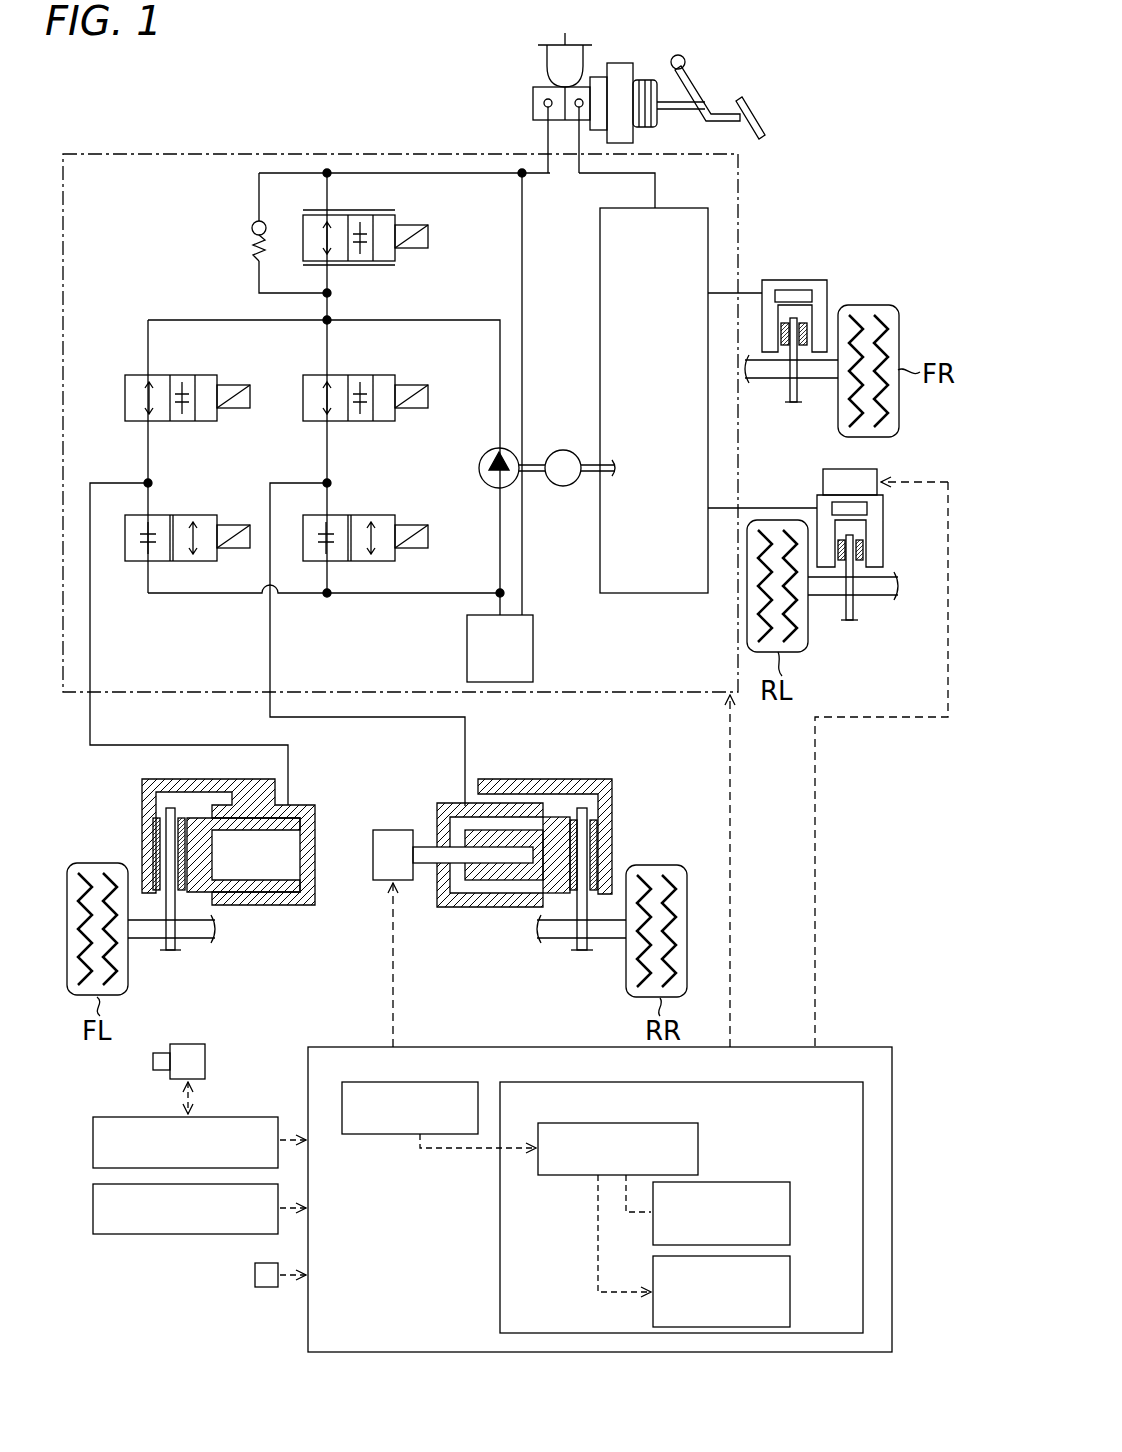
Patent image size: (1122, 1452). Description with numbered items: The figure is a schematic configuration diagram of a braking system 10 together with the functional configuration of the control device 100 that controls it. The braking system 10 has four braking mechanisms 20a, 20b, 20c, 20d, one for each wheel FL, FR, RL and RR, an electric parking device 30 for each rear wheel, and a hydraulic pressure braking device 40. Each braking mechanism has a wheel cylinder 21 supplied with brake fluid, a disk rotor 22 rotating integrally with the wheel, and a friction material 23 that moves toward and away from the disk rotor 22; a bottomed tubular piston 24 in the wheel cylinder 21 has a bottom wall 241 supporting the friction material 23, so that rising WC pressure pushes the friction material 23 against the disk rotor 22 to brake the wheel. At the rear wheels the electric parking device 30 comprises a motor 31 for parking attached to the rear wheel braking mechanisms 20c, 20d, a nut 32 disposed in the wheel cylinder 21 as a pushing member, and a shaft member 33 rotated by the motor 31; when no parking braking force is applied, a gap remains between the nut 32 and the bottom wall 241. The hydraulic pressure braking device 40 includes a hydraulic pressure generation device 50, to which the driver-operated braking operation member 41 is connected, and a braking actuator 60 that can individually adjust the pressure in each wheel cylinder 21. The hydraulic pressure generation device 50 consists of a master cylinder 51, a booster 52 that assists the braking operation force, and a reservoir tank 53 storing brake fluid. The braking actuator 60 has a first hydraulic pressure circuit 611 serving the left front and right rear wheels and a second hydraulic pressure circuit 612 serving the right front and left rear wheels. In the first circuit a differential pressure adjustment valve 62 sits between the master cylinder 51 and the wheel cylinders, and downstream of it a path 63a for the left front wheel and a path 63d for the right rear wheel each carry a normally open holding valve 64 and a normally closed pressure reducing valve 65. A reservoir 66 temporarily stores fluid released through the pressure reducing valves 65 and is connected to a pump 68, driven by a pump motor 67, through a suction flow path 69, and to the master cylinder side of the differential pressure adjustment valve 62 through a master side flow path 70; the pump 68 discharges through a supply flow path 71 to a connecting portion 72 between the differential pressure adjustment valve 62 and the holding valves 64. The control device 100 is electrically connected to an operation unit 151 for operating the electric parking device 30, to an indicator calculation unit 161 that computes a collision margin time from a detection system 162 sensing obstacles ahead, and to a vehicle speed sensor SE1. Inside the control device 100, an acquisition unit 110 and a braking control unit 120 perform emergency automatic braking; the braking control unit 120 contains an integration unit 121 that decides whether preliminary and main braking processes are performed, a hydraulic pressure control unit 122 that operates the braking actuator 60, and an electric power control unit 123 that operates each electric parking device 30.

The braking system 10 is at (872, 792).
The front wheel braking mechanism 20a is at (294, 942).
The front wheel braking mechanism 20b is at (858, 232).
The rear wheel braking mechanism 20c is at (866, 642).
The rear wheel braking mechanism 20d is at (627, 782).
The wheel cylinder 21 is at (793, 280).
The disk rotor 22 is at (789, 395).
The friction material 23 is at (789, 325).
The piston 24 is at (248, 906).
The bottom wall 241 is at (222, 852).
The electric parking device 30 is at (402, 770).
The motor for parking 31 is at (840, 469).
The nut 32 is at (494, 907).
The shaft member 33 is at (425, 847).
The hydraulic pressure braking device 40 is at (207, 90).
The braking operation member 41 is at (757, 120).
The hydraulic pressure generation device 50 is at (519, 57).
The master cylinder 51 is at (533, 100).
The booster 52 is at (645, 80).
The reservoir tank 53 is at (572, 45).
The braking actuator 60 is at (97, 156).
The first hydraulic pressure circuit 611 is at (372, 173).
The second hydraulic pressure circuit 612 is at (697, 208).
The differential pressure adjustment valve 62 is at (385, 212).
The path for the left front wheel 63a is at (148, 345).
The path for the right rear wheel 63d is at (327, 345).
The holding valve 64 is at (195, 375).
The pressure reducing valve 65 is at (195, 515).
The reservoir 66 is at (467, 655).
The pump motor 67 is at (565, 450).
The pump 68 is at (484, 460).
The suction flow path 69 is at (499, 575).
The master side flow path 70 is at (525, 290).
The supply flow path 71 is at (448, 320).
The connecting portion 72 is at (333, 309).
The control device 100 is at (843, 1048).
The acquisition unit 110 is at (425, 1082).
The braking control unit 120 is at (810, 1082).
The integration unit 121 is at (700, 1148).
The hydraulic pressure control unit 122 is at (790, 1212).
The electric power control unit 123 is at (790, 1287).
The operation unit 151 is at (93, 1208).
The indicator calculation unit 161 is at (93, 1141).
The detection system 162 is at (153, 1062).
The vehicle speed sensor SE1 is at (255, 1275).